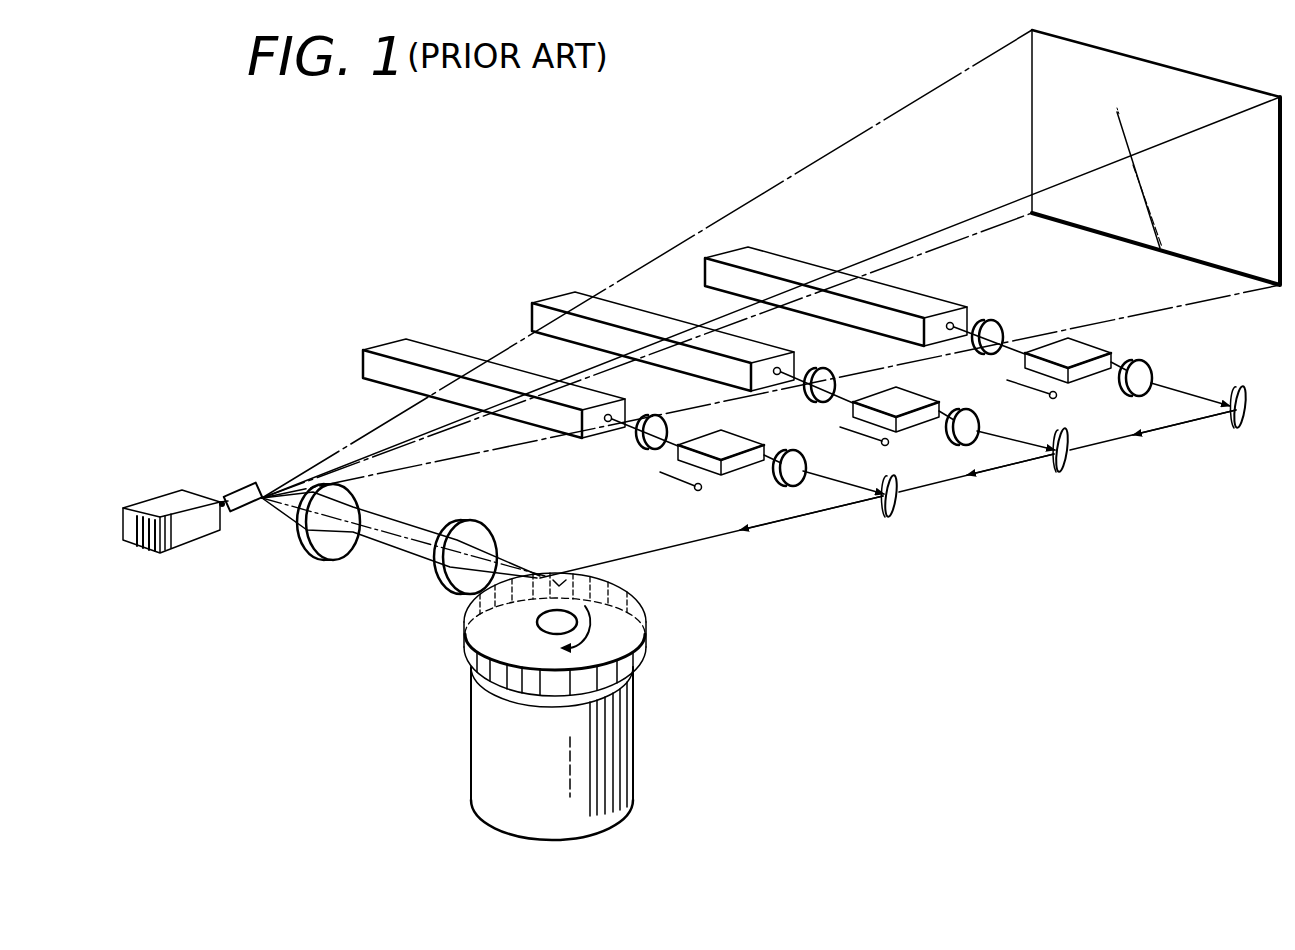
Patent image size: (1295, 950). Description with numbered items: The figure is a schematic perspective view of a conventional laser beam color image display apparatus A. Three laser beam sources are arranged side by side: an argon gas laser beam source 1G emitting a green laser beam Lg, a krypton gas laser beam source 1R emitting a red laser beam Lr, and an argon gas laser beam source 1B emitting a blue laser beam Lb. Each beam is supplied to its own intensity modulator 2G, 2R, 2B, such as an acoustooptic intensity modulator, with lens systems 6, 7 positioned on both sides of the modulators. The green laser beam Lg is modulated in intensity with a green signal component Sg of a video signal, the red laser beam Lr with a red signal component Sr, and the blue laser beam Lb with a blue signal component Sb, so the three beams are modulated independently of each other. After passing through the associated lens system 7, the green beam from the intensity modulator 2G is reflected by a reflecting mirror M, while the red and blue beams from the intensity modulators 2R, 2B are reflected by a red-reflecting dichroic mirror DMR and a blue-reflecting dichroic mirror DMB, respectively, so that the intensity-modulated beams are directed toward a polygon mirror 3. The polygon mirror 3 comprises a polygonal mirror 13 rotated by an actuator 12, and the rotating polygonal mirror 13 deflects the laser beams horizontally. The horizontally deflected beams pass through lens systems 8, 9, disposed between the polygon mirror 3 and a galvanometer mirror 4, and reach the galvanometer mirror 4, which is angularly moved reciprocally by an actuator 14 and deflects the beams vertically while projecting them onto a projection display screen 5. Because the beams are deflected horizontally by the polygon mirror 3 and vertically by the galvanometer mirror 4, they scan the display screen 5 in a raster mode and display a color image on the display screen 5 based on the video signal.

The laser beam color image display apparatus A is at (249, 252).
The argon gas laser beam source 1B is at (395, 342).
The krypton gas laser beam source 1R is at (572, 296).
The argon gas laser beam source 1G is at (775, 256).
The intensity modulator 2B is at (743, 432).
The intensity modulator 2R is at (927, 394).
The intensity modulator 2G is at (1110, 349).
The polygon mirror 3 is at (707, 648).
The galvanometer mirror 4 is at (240, 493).
The projection display screen 5 is at (1193, 82).
The lens system 6 is at (640, 447).
The lens system 7 is at (807, 459).
The lens system 8 is at (346, 507).
The lens system 9 is at (485, 523).
The actuator 12 is at (637, 731).
The polygonal mirror 13 is at (643, 657).
The actuator 14 is at (160, 500).
The reflecting mirror M is at (1238, 429).
The red-reflecting dichroic mirror DMR is at (1065, 475).
The blue-reflecting dichroic mirror DMB is at (894, 515).
The blue laser beam Lb is at (672, 412).
The red laser beam Lr is at (845, 391).
The green laser beam Lg is at (1030, 347).
The blue signal component Sb is at (701, 490).
The red signal component Sr is at (882, 443).
The green signal component Sg is at (1050, 398).